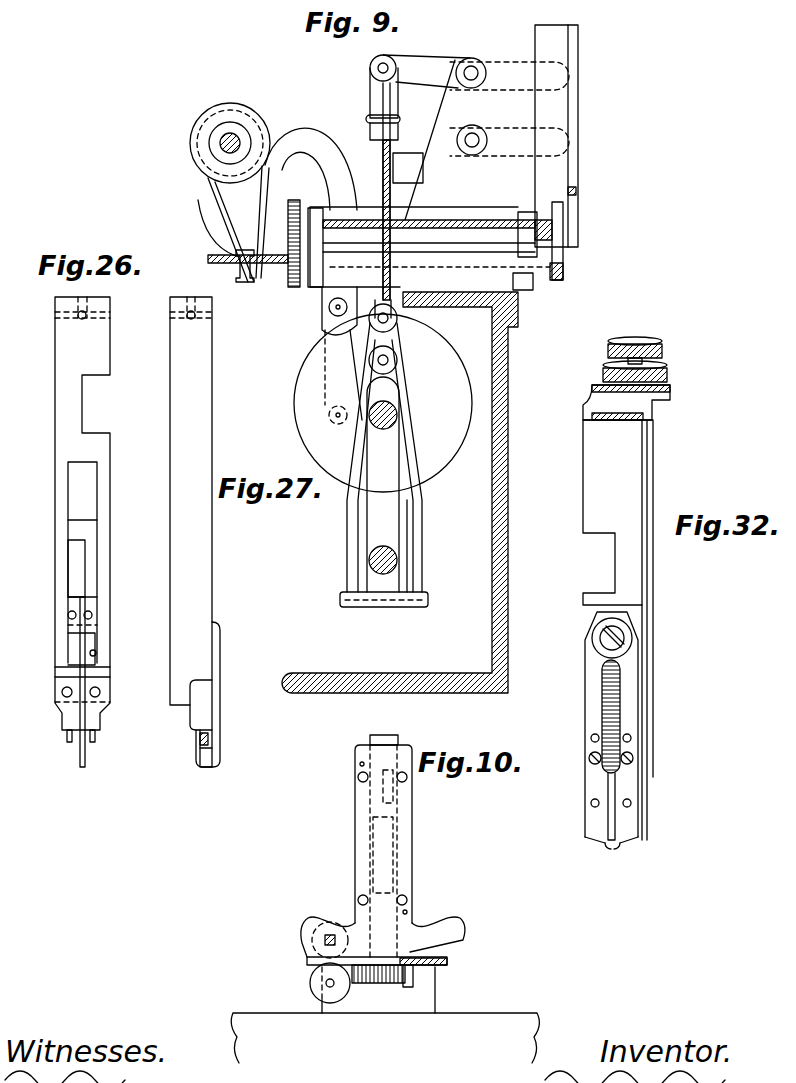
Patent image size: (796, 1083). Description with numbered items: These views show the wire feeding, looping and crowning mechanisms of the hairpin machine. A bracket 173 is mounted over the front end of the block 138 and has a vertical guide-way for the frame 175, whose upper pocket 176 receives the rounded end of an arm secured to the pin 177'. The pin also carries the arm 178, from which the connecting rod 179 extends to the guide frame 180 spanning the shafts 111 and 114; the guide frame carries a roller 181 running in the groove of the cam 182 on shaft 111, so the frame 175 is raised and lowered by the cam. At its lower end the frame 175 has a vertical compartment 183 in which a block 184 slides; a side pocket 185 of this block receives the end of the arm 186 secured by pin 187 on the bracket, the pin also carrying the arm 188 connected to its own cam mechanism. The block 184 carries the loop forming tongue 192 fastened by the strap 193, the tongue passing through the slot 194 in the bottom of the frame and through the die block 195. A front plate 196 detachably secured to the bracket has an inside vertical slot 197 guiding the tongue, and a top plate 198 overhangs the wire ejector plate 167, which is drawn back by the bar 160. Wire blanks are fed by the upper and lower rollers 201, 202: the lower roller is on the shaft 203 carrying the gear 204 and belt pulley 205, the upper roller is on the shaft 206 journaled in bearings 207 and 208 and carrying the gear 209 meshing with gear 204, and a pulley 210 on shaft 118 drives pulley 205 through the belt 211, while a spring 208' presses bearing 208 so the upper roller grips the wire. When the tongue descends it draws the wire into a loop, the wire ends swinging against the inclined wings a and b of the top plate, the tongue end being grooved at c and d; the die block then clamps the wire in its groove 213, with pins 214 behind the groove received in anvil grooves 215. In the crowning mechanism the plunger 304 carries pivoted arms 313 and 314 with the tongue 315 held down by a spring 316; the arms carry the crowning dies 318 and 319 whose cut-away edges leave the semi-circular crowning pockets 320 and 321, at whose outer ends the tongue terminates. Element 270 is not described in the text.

In FIG. 9, the shaft 118 is at (220, 143).
In FIG. 9, the pulley 210 is at (215, 162).
In FIG. 9, the belt 211 is at (222, 206).
In FIG. 9, the shaft 203 is at (218, 256).
In FIG. 9, the belt pulley 205 is at (247, 284).
In FIG. 9, the gear 204 is at (292, 290).
In FIG. 9, the gear 209 is at (293, 200).
In FIG. 9, the bearing 207 is at (313, 224).
In FIG. 9, the shaft 206 is at (468, 221).
In FIG. 9, the connecting rod 179 is at (414, 176).
In FIG. 9, the arm 178 is at (416, 63).
In FIG. 9, the pin 177' is at (483, 53).
In FIG. 9, the arm 186 is at (490, 128).
In FIG. 9, the pin 187 is at (484, 127).
In FIG. 9, the arm 188 is at (414, 130).
In FIG. 9, the bracket 173 is at (408, 168).
In FIG. 9, the bearing 208 is at (513, 211).
In FIG. 9, the spring 208' is at (582, 178).
In FIG. 9, the wing a is at (577, 191).
In FIG. 10, the wing a is at (320, 924).
In FIG. 9, the upper roller 201 is at (565, 226).
In FIG. 10, the upper roller 201 is at (330, 922).
In FIG. 9, the top plate 198 is at (555, 238).
In FIG. 10, the top plate 198 is at (308, 958).
In FIG. 9, the lower roller 202 is at (565, 270).
In FIG. 10, the lower roller 202 is at (312, 990).
In FIG. 9, the front plate 196 is at (580, 97).
In FIG. 10, the front plate 196 is at (408, 815).
In FIG. 9, the block 138 is at (523, 283).
In FIG. 9, the cam 182 is at (462, 450).
In FIG. 9, the roller 181 is at (397, 323).
In FIG. 9, the guide frame 180 is at (353, 540).
In FIG. 9, the shaft 111 is at (398, 418).
In FIG. 9, the shaft 114 is at (370, 566).
In FIG. 26, the frame 175 is at (62, 410).
In FIG. 27, the frame 175 is at (210, 531).
In FIG. 10, the frame 175 is at (398, 738).
In FIG. 26, the pocket 176 is at (97, 395).
In FIG. 26, the block 184 is at (73, 527).
In FIG. 10, the block 184 is at (382, 827).
In FIG. 26, the side pocket 185 is at (73, 572).
In FIG. 26, the strap 193 is at (70, 621).
In FIG. 26, the loop forming tongue 192 is at (80, 648).
In FIG. 27, the loop forming tongue 192 is at (216, 673).
In FIG. 26, the vertical compartment 183 is at (96, 653).
In FIG. 26, the slot 194 is at (100, 668).
In FIG. 26, the die block 195 is at (100, 700).
In FIG. 27, the die block 195 is at (205, 710).
In FIG. 26, the groove 213 is at (64, 733).
In FIG. 27, the groove 213 is at (193, 731).
In FIG. 26, the pins 214 is at (96, 739).
In FIG. 27, the vertical groove 215 is at (210, 738).
In FIG. 27, the groove c is at (214, 748).
In FIG. 27, the groove d is at (212, 767).
In FIG. 32, the plunger 304 is at (648, 506).
In FIG. 32, the spring 316 is at (603, 705).
In FIG. 32, the tongue 315 is at (613, 783).
In FIG. 32, the arm 313 is at (588, 790).
In FIG. 32, the arm 314 is at (630, 817).
In FIG. 32, the crowning die 318 is at (585, 837).
In FIG. 32, the crowning die 319 is at (630, 840).
In FIG. 32, the crowning pocket 320 is at (610, 843).
In FIG. 32, the crowning pocket 321 is at (617, 845).
In FIG. 10, the vertical slot 197 is at (380, 968).
In FIG. 10, the bar 160 is at (414, 980).
In FIG. 10, the wire ejector plate 167 is at (450, 968).
In FIG. 10, the plate 270 is at (447, 963).
In FIG. 10, the wing b is at (460, 927).